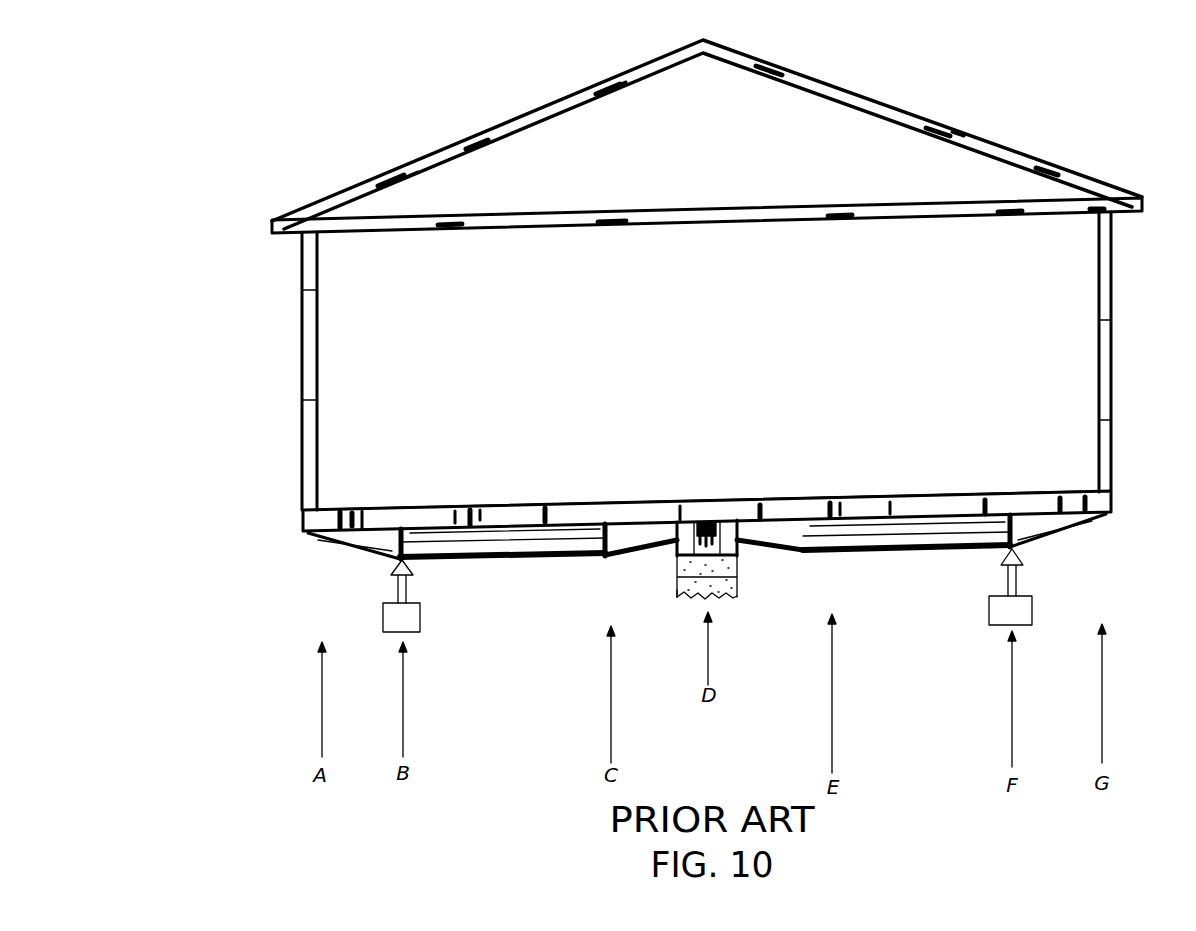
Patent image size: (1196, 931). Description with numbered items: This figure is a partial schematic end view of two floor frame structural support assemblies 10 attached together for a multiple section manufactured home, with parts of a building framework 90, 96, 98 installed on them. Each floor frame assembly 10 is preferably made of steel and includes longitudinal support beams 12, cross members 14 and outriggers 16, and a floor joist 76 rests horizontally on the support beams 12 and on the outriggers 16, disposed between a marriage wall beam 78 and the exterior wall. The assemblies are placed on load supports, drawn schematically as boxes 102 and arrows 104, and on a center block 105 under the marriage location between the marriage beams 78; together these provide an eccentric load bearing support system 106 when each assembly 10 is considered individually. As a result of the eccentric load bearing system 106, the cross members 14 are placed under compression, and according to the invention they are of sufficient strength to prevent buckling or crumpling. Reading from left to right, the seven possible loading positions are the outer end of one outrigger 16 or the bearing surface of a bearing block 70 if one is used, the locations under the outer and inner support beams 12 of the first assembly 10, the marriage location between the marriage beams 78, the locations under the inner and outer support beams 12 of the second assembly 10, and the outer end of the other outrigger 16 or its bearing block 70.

The floor frame structural support assembly 10 is at (452, 578).
The support beam 12 is at (401, 530).
The cross member 14 is at (535, 550).
The outrigger 16 is at (637, 531).
The bearing block 70 is at (682, 548).
The floor joist 76 is at (554, 507).
The marriage wall beam 78 is at (712, 520).
The right wall 90 is at (1111, 357).
The left wall 96 is at (304, 376).
The roof 98 is at (858, 100).
The load support 102 is at (737, 592).
The load support arrow 104 is at (394, 587).
The center block 105 is at (678, 594).
The eccentric load bearing support system 106 is at (538, 656).